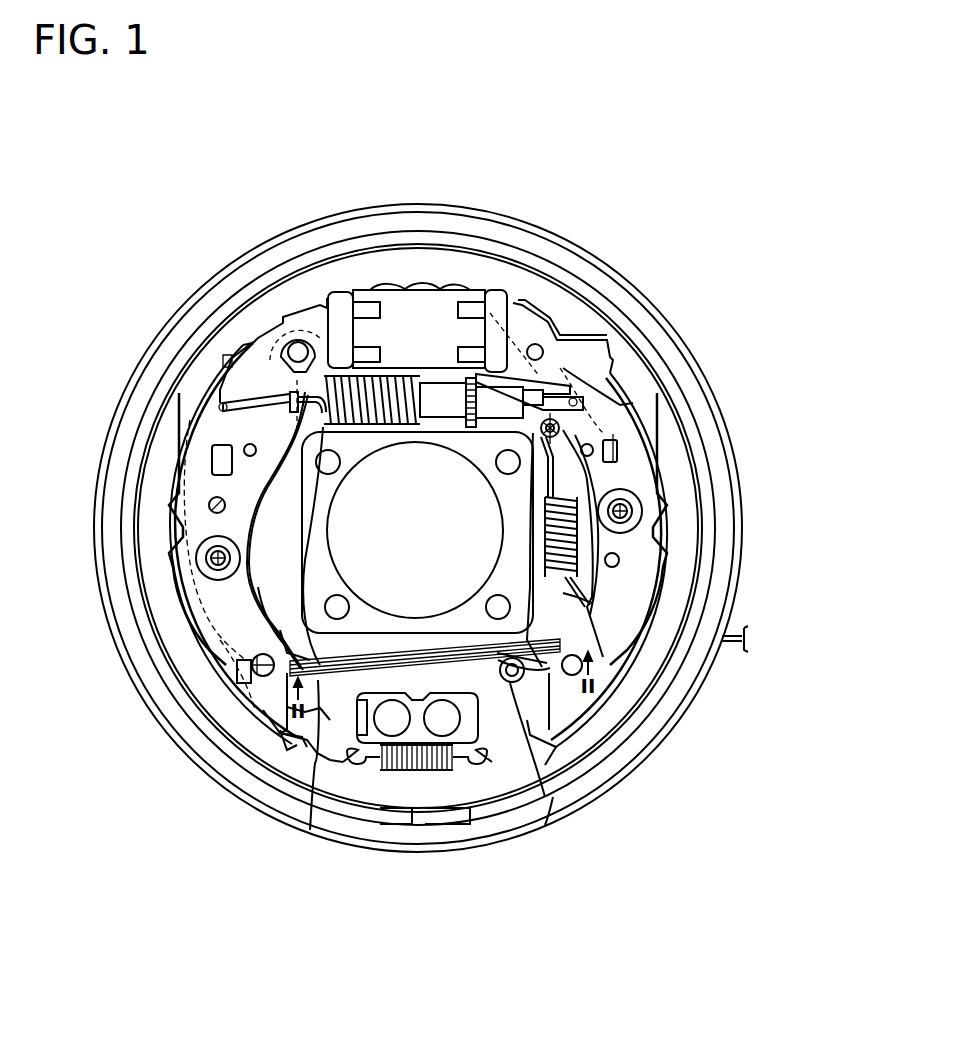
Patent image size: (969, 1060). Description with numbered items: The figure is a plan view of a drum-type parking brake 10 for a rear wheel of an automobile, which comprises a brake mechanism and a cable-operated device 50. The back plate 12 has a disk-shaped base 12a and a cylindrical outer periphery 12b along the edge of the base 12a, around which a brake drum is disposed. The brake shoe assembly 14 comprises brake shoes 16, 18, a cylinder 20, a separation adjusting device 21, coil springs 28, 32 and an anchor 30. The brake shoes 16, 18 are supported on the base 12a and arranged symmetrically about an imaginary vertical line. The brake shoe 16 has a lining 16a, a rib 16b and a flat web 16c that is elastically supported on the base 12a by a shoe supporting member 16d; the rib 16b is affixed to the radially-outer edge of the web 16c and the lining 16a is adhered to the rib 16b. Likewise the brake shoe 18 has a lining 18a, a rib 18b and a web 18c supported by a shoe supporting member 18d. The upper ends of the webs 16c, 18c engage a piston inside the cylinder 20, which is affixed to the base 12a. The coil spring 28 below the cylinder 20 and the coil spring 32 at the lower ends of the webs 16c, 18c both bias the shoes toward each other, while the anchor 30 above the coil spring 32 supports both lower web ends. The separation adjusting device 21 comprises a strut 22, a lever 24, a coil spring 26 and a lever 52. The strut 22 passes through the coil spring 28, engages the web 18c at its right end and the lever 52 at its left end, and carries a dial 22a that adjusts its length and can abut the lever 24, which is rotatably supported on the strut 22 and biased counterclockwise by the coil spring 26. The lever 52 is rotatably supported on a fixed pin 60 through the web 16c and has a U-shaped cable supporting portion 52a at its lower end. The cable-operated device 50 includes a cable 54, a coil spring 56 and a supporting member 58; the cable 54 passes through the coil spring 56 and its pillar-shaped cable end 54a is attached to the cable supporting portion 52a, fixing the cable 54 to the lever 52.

The parking brake 10 is at (699, 154).
The back plate 12 is at (545, 228).
The base 12a is at (465, 274).
The outer periphery 12b is at (560, 238).
The brake shoe assembly 14 is at (320, 290).
The brake shoe 16 is at (178, 516).
The lining 16a is at (185, 427).
The rib 16b is at (177, 468).
The web 16c is at (203, 595).
The shoe supporting member 16d is at (202, 552).
The brake shoe 18 is at (658, 507).
The lining 18a is at (658, 443).
The rib 18b is at (662, 490).
The web 18c is at (637, 590).
The shoe supporting member 18d is at (642, 517).
The cylinder 20 is at (380, 388).
The separation adjusting device 21 is at (580, 598).
The strut 22 is at (475, 378).
The dial 22a is at (535, 374).
The lever 24 is at (558, 424).
The coil spring 26 is at (590, 548).
The coil spring 28 is at (418, 318).
The anchor 30 is at (470, 722).
The coil spring 32 is at (415, 765).
The cable-operated device 50 is at (352, 692).
The lever 52 is at (258, 672).
The cable supporting portion 52a is at (270, 710).
The cable 54 is at (320, 708).
The cable end 54a is at (287, 750).
The coil spring 56 is at (440, 660).
The supporting member 58 is at (515, 682).
The fixed pin 60 is at (296, 348).